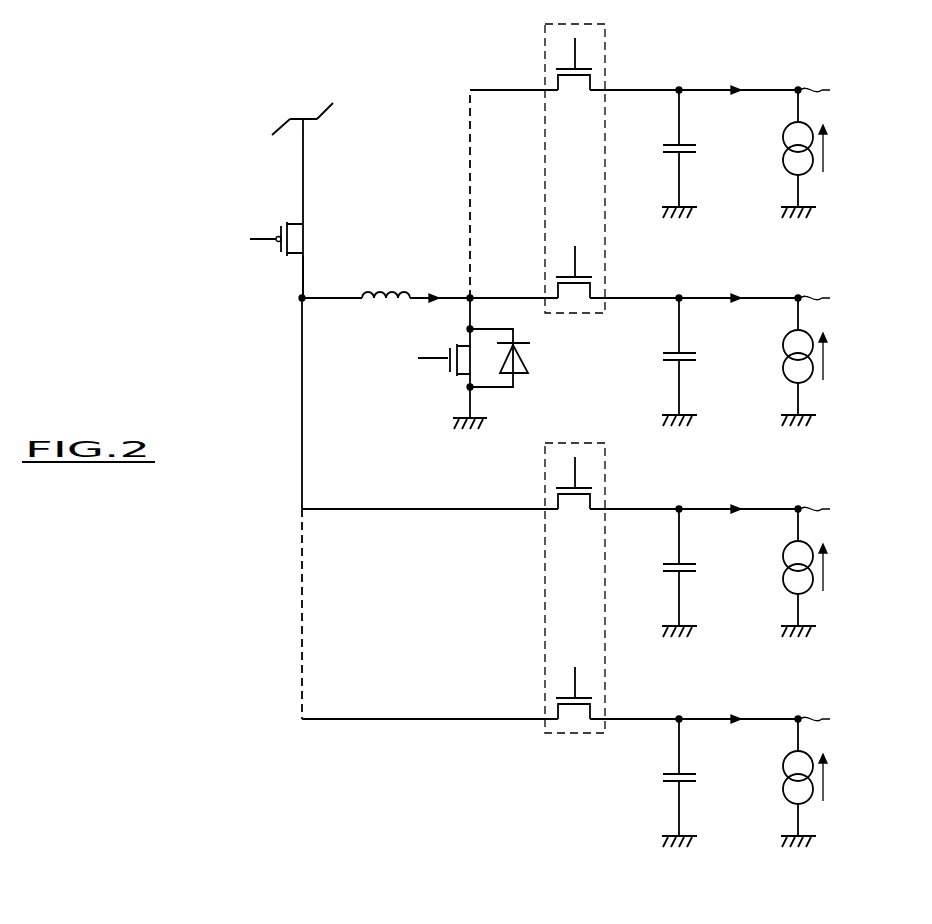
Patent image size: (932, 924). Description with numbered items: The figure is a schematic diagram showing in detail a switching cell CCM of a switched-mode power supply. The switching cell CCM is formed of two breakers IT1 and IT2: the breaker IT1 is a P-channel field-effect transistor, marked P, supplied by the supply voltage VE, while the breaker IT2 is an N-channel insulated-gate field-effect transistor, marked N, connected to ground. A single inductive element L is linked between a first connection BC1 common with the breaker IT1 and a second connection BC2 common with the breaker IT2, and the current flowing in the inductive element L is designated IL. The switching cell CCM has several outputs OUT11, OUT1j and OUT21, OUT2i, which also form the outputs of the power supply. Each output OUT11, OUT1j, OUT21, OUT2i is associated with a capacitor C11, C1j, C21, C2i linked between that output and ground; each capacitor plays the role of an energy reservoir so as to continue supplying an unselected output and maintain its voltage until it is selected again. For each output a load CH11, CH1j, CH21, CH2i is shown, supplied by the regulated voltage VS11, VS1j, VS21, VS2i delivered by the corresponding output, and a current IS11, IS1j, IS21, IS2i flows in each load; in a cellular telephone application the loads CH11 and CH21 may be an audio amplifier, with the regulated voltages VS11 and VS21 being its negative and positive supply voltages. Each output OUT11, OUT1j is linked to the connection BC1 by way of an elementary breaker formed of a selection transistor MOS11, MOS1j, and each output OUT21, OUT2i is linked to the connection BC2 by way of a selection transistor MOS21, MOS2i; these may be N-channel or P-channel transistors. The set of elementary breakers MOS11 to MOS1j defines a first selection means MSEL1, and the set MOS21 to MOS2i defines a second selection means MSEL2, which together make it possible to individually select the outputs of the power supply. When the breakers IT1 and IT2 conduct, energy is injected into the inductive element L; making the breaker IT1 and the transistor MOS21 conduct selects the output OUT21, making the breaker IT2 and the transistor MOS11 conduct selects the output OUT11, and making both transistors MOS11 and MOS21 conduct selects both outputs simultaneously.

The supply voltage VE is at (302, 158).
The breaker IT1 is at (263, 204).
The P-type transistor terminal P is at (287, 210).
The switching cell CCM is at (380, 210).
The first connection BC1 is at (307, 300).
The inductive element L is at (386, 283).
The current IL is at (440, 313).
The second connection BC2 is at (468, 296).
The breaker IT2 is at (425, 377).
The N-type transistor terminal N is at (456, 390).
The second selection means MSEL2 is at (577, 322).
The first selection means MSEL1 is at (577, 742).
The selection transistor MOS2i is at (610, 64).
The selection transistor MOS21 is at (614, 272).
The selection transistor MOS11 is at (614, 483).
The selection transistor MOS1j is at (610, 693).
The current IS2i is at (735, 76).
The current IS21 is at (739, 284).
The current IS11 is at (739, 495).
The current IS1j is at (735, 705).
The output OUT2i is at (848, 90).
The output OUT21 is at (852, 298).
The output OUT11 is at (852, 509).
The output OUT1j is at (848, 719).
The capacitor C2i is at (657, 152).
The capacitor C21 is at (657, 360).
The capacitor C11 is at (657, 571).
The capacitor C1j is at (657, 781).
The load CH2i is at (768, 154).
The load CH21 is at (768, 362).
The load CH11 is at (768, 573).
The load CH1j is at (768, 783).
The regulated voltage VS2i is at (848, 148).
The regulated voltage VS21 is at (852, 356).
The regulated voltage VS11 is at (852, 567).
The regulated voltage VS1j is at (848, 777).